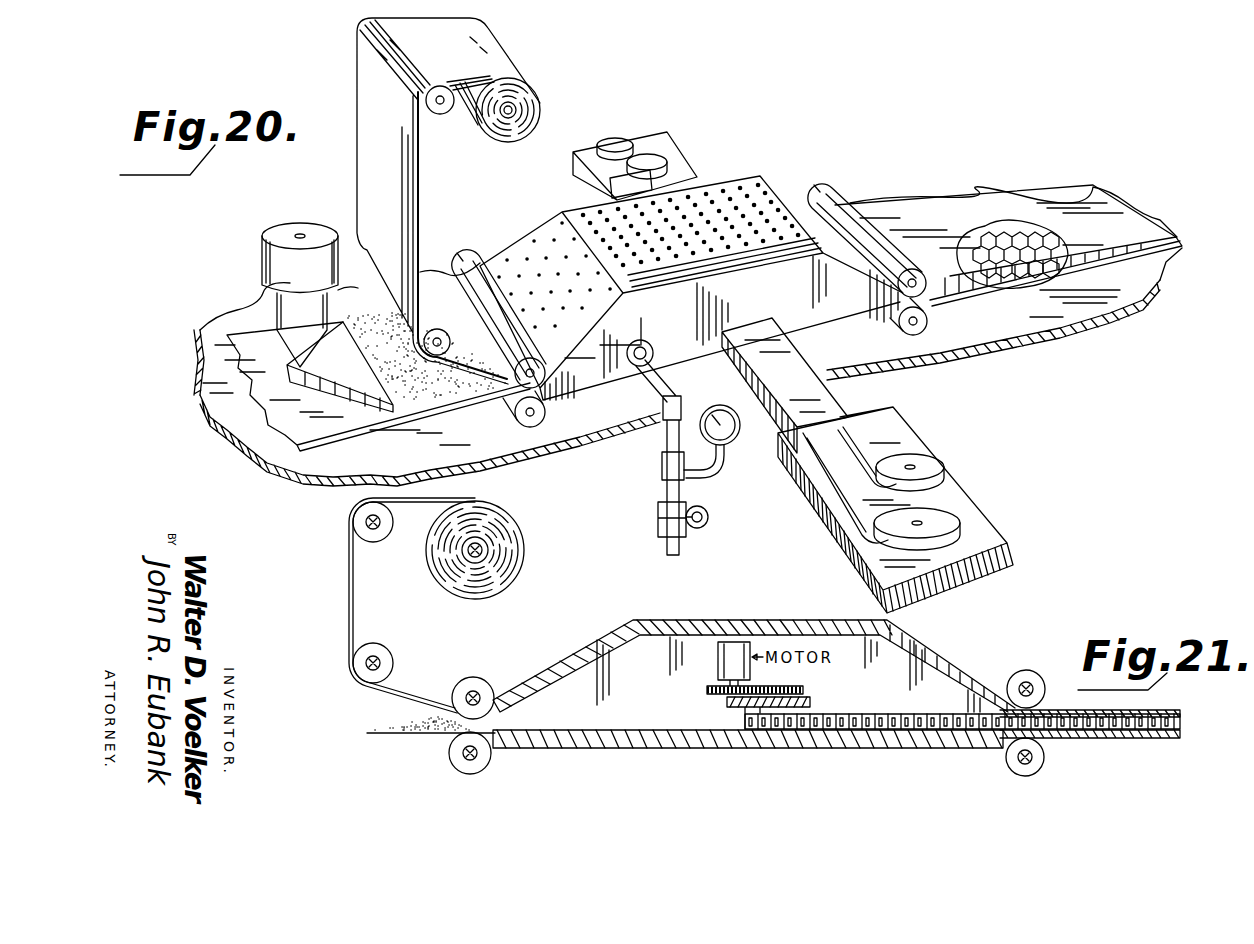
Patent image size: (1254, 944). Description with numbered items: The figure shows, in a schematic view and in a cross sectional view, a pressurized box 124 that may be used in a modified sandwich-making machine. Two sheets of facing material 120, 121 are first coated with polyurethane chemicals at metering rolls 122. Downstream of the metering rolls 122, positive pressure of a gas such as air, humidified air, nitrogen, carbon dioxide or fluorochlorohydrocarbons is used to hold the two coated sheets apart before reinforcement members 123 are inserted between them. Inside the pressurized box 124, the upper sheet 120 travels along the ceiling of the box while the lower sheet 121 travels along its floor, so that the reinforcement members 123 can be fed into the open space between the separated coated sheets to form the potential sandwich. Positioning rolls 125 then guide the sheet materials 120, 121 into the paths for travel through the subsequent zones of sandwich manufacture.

In FIG. 20, the upper sheet of facing material 120 is at (421, 184).
In FIG. 21, the upper sheet of facing material 120 is at (438, 705).
In FIG. 20, the lower sheet of facing material 121 is at (383, 424).
In FIG. 21, the lower sheet of facing material 121 is at (405, 737).
In FIG. 20, the metering rolls 122 is at (478, 258).
In FIG. 21, the metering rolls 122 is at (488, 684).
In FIG. 20, the reinforcement members 123 is at (1032, 233).
In FIG. 21, the reinforcement members 123 is at (880, 713).
In FIG. 20, the pressurized box 124 is at (838, 320).
In FIG. 21, the pressurized box 124 is at (722, 608).
In FIG. 20, the positioning rolls 125 is at (928, 296).
In FIG. 21, the positioning rolls 125 is at (1066, 661).